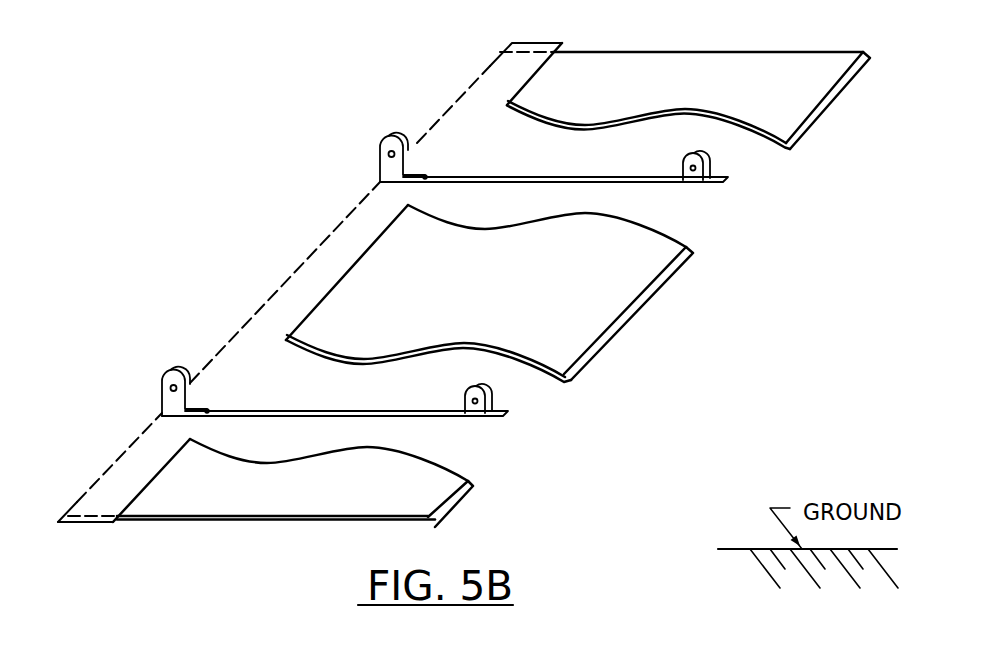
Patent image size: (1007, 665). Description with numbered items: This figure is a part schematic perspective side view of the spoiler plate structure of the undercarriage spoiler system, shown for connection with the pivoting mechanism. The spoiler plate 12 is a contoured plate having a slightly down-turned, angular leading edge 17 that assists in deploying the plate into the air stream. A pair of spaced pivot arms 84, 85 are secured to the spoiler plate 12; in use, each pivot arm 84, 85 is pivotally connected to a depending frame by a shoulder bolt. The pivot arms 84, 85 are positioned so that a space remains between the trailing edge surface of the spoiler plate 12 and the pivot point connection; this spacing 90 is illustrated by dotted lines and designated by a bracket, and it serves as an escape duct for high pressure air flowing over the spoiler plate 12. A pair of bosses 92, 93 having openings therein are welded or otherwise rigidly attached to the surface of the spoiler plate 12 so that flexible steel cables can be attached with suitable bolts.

The spoiler plate 12 is at (567, 272).
The angular leading edge 17 is at (617, 332).
The pivot arm 84 is at (162, 383).
The pivot arm 85 is at (380, 147).
The spacing 90 is at (535, 42).
The boss 92 is at (490, 395).
The boss 93 is at (708, 163).